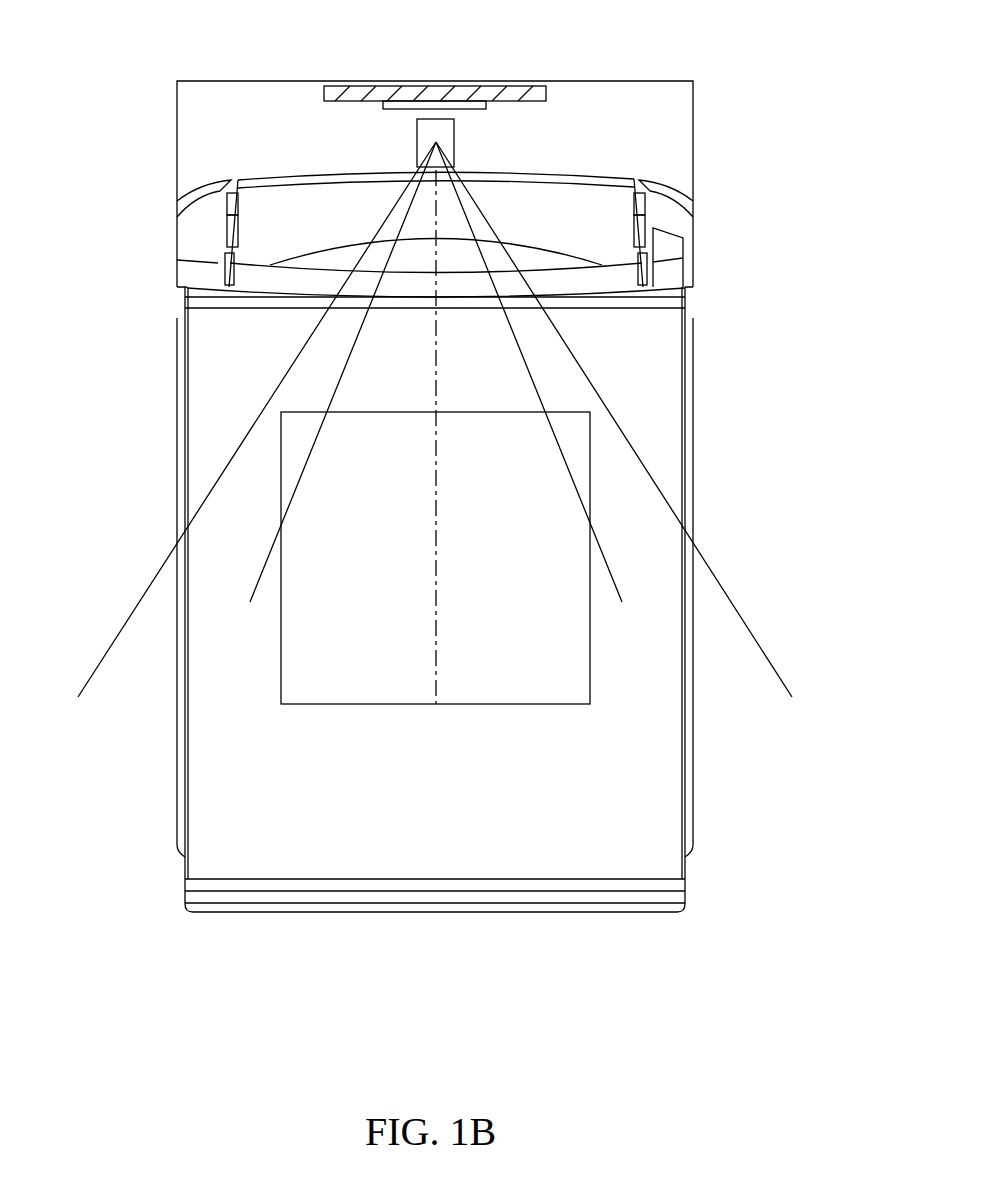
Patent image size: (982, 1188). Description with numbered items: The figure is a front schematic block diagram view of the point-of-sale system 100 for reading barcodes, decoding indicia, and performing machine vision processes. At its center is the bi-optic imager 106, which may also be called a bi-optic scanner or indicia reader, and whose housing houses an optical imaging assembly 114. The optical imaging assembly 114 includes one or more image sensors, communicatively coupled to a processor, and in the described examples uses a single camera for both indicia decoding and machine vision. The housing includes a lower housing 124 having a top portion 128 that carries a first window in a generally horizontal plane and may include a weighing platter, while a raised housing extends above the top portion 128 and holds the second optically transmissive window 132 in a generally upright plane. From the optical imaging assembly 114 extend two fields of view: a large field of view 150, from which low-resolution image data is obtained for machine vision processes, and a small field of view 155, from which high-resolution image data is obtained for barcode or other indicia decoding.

The point-of-sale system 100 is at (437, 469).
The bi-optic imager 106 is at (640, 80).
The optical imaging assembly 114 is at (660, 98).
The lower housing 124 is at (685, 790).
The top portion 128 is at (650, 858).
The second optically transmissive window 132 is at (527, 572).
The large field of view 150 is at (118, 632).
The small field of view 155 is at (262, 567).